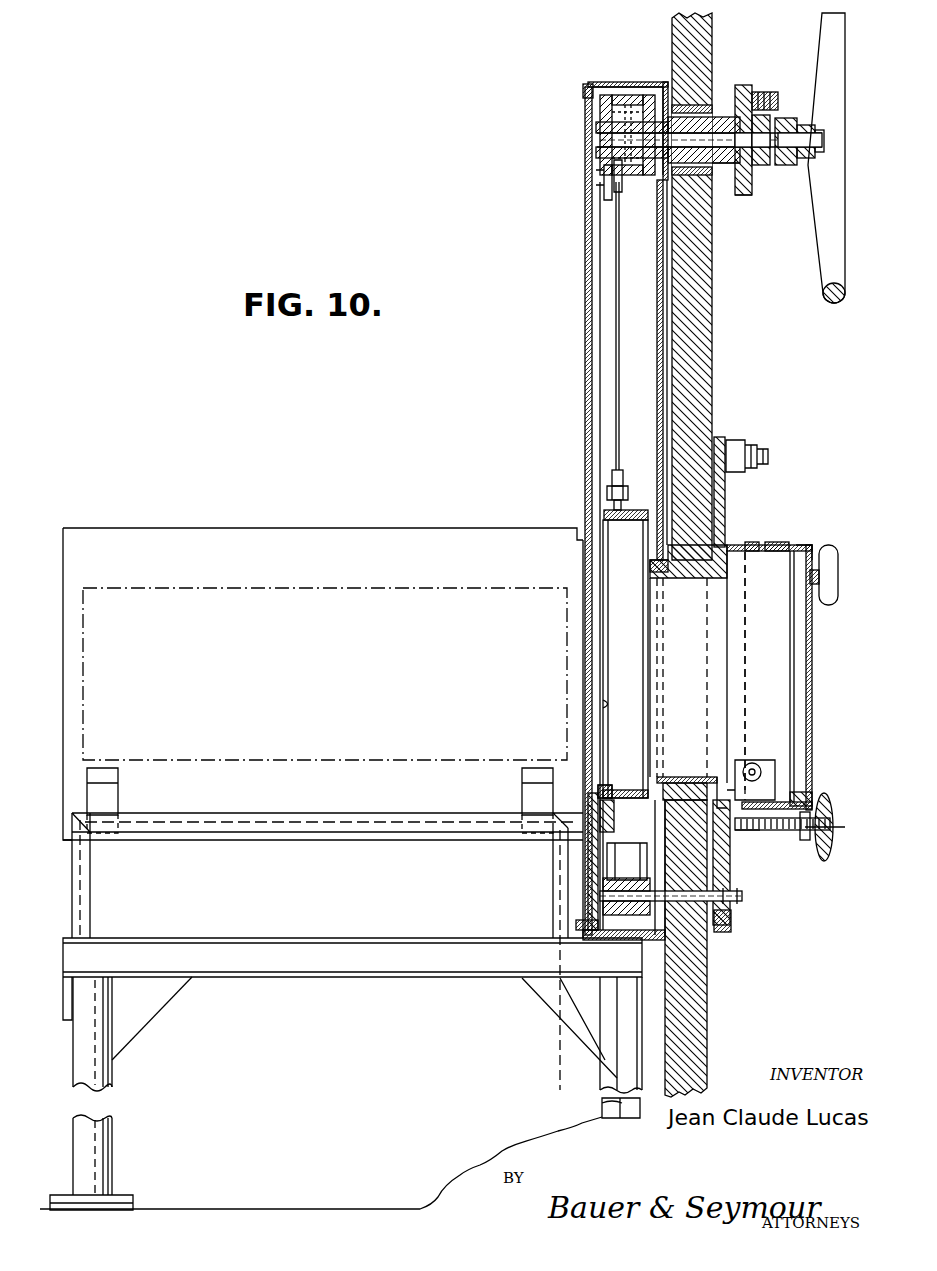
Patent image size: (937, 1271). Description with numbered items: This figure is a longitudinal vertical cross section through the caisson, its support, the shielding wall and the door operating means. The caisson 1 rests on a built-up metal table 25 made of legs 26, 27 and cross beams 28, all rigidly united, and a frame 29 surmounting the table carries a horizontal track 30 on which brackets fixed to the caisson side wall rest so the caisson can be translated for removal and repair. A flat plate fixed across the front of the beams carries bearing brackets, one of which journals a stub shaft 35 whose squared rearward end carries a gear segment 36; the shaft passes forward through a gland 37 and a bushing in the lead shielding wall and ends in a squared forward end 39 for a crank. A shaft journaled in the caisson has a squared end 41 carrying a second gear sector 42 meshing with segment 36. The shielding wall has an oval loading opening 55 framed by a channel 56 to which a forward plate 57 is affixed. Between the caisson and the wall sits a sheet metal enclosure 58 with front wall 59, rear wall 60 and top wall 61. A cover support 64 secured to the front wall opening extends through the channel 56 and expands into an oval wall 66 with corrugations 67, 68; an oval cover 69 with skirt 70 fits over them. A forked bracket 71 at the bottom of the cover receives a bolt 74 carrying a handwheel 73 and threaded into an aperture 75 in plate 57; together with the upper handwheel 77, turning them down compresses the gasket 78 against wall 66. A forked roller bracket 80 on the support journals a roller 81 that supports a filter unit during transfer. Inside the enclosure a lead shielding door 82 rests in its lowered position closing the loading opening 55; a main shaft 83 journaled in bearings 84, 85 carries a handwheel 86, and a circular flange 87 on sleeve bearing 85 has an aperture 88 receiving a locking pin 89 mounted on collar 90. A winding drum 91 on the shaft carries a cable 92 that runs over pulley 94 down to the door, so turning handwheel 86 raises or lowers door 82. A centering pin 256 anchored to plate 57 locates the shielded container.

The caisson 1 is at (450, 527).
The table 25 is at (446, 992).
The leg 26 is at (112, 1118).
The leg 27 is at (600, 1106).
The cross beam 28 is at (322, 965).
The frame 29 is at (94, 898).
The track 30 is at (280, 835).
The stub shaft 35 is at (717, 928).
The gear segment 36 is at (590, 872).
The gland 37 is at (660, 940).
The squared forward end 39 is at (745, 897).
The squared end 41 is at (604, 790).
The second gear sector 42 is at (608, 810).
The loading opening 55 is at (695, 572).
The channel 56 is at (706, 788).
The forward plate 57 is at (726, 860).
The enclosure 58 is at (586, 379).
The front vertical wall 59 is at (660, 376).
The rear vertical wall 60 is at (590, 336).
The top wall 61 is at (635, 60).
The cover support 64 is at (700, 777).
The oval wall 66 is at (755, 556).
The corrugation 67 is at (758, 545).
The corrugation 68 is at (780, 545).
The oval cover 69 is at (808, 700).
The skirt 70 is at (803, 546).
The forked bracket 71 is at (805, 840).
The handwheel 73 is at (820, 862).
The bolt 74 is at (762, 832).
The aperture 75 is at (738, 832).
The handwheel 77 is at (836, 572).
The gasket 78 is at (803, 795).
The forked roller bracket 80 is at (768, 785).
The roller 81 is at (756, 766).
The shielding door 82 is at (603, 703).
The main shaft 83 is at (760, 138).
The bearing 84 is at (598, 131).
The sleeve bearing 85 is at (716, 166).
The handwheel 86 is at (835, 235).
The circular flange 87 is at (748, 194).
The aperture 88 is at (740, 102).
The locking pin 89 is at (765, 101).
The collar 90 is at (760, 166).
The winding drum 91 is at (622, 150).
The cable 92 is at (618, 305).
The pulley 94 is at (613, 186).
The centering pin 256 is at (760, 455).